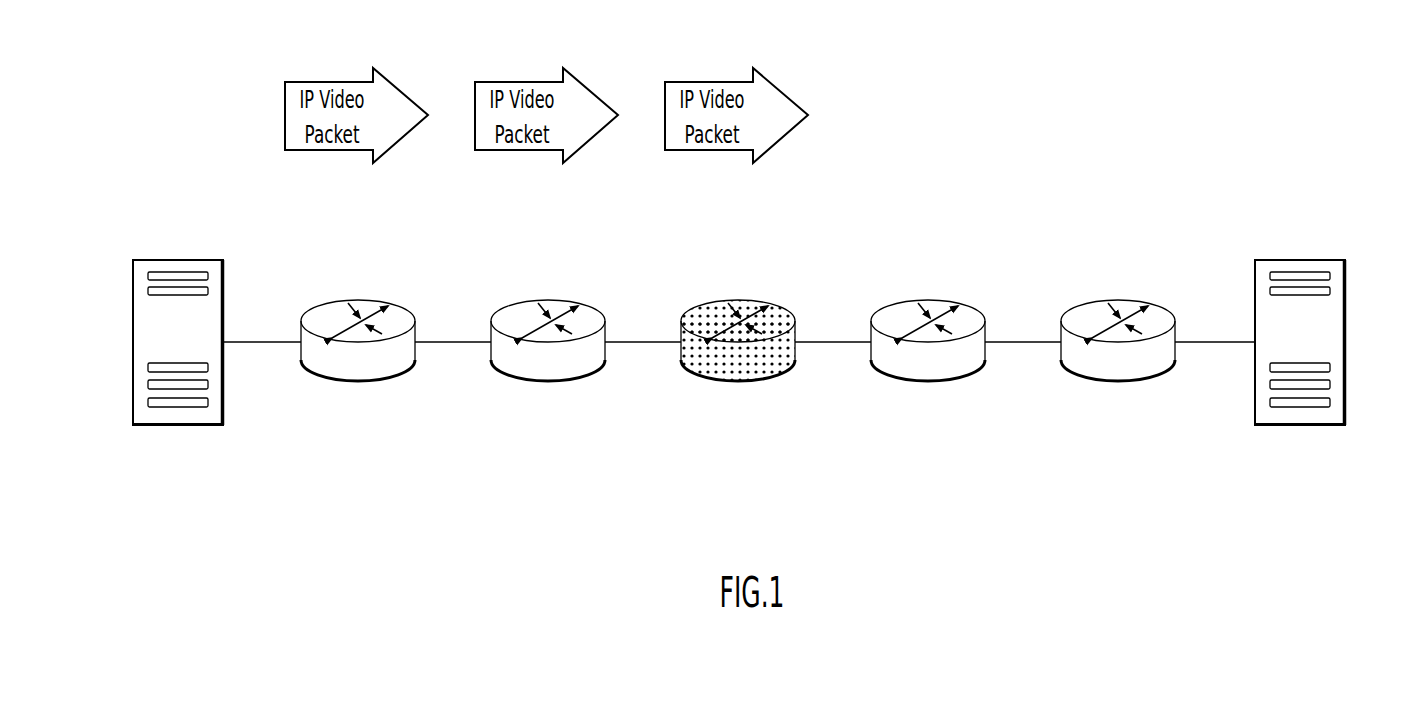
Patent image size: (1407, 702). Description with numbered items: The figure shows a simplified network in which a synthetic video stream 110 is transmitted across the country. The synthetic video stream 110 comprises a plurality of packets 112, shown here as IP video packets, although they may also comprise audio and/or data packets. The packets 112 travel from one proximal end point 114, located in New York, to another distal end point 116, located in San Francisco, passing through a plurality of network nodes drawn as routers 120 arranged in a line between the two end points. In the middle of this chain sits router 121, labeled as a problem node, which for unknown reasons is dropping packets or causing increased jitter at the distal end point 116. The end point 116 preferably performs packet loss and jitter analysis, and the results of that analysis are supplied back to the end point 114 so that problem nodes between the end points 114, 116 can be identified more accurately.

The synthetic video stream 110 is at (180, 153).
The packets 112 is at (327, 82).
The end point 114 is at (133, 342).
The end point 116 is at (1345, 342).
The routers 120 is at (360, 383).
The router 121 is at (737, 300).